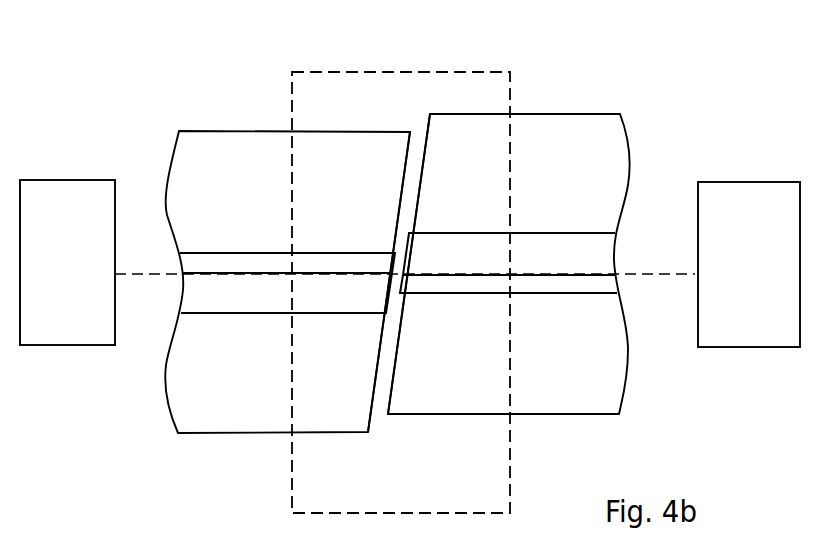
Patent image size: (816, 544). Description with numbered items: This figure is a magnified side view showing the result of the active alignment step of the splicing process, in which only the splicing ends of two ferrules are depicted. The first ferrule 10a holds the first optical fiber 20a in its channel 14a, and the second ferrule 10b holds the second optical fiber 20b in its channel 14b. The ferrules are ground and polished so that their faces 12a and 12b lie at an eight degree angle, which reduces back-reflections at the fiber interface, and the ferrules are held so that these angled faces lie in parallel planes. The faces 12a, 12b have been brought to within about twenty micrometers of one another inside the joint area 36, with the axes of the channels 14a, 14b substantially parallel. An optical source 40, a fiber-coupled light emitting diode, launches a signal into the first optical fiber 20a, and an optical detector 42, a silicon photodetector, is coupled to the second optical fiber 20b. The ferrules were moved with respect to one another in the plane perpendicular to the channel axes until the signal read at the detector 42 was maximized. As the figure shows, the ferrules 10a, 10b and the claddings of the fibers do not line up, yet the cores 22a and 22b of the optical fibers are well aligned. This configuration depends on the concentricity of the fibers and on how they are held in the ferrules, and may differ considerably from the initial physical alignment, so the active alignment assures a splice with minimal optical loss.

The first ferrule 10a is at (232, 122).
The second ferrule 10b is at (570, 103).
The face of first ferrule 12a is at (370, 363).
The face of second ferrule 12b is at (402, 352).
The channel of first ferrule 14a is at (268, 315).
The channel of second ferrule 14b is at (523, 300).
The first optical fiber 20a is at (223, 313).
The second optical fiber 20b is at (577, 302).
The core of first optical fiber 22a is at (213, 268).
The core of second optical fiber 22b is at (553, 272).
The joint area 36 is at (285, 458).
The light emitting diode 40 is at (42, 353).
The photodetector 42 is at (790, 361).